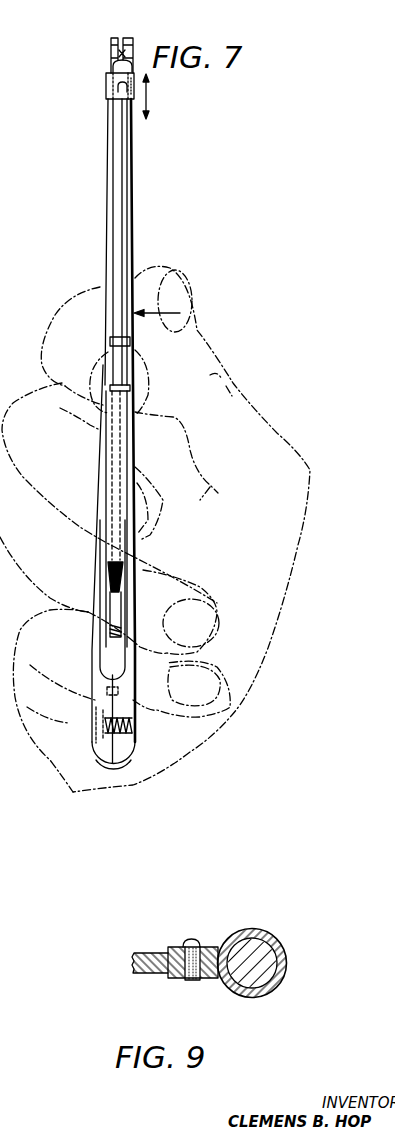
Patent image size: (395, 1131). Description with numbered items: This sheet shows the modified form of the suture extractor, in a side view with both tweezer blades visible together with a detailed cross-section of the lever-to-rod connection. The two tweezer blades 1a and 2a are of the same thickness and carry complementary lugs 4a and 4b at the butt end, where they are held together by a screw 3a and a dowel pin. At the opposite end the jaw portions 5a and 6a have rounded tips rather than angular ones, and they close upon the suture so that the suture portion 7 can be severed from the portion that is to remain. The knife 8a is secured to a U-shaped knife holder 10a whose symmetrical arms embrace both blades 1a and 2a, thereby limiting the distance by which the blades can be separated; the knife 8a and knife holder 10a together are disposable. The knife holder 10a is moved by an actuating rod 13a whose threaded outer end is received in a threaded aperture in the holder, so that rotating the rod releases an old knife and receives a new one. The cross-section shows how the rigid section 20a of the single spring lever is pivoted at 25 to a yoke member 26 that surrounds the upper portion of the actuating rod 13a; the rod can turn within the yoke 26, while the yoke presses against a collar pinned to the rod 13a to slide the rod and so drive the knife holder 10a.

In FIG. 7, the blade 1a is at (128, 157).
In FIG. 7, the blade 2a is at (108, 153).
In FIG. 7, the screw 3a is at (123, 747).
In FIG. 7, the lug 4a is at (127, 712).
In FIG. 7, the lug 4b is at (100, 653).
In FIG. 7, the jaw portion 5a is at (133, 42).
In FIG. 7, the jaw portion 6a is at (108, 43).
In FIG. 7, the portion of suture 7 is at (122, 44).
In FIG. 7, the knife 8a is at (113, 72).
In FIG. 7, the knife holder 10a is at (105, 88).
In FIG. 9, the actuating rod 13a is at (288, 988).
In FIG. 9, the rigid section 20a is at (145, 968).
In FIG. 9, the pivot 25 is at (194, 947).
In FIG. 9, the yoke member 26 is at (280, 950).